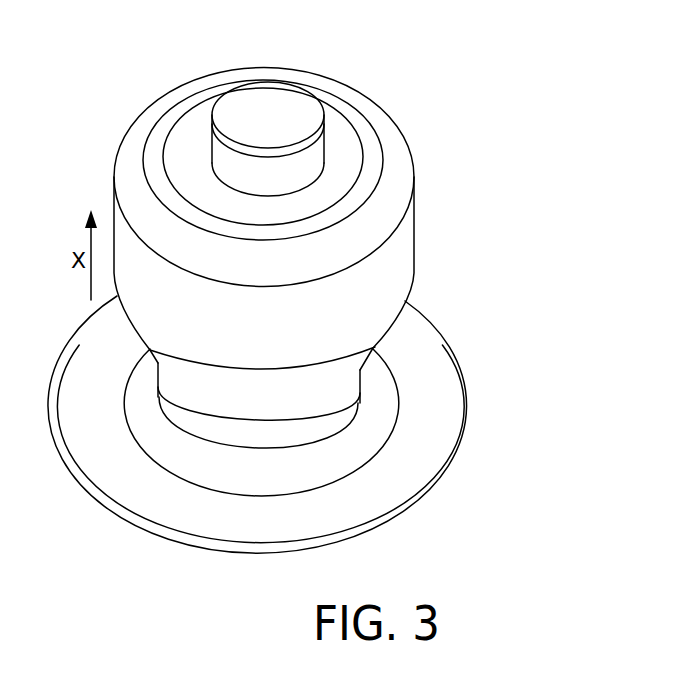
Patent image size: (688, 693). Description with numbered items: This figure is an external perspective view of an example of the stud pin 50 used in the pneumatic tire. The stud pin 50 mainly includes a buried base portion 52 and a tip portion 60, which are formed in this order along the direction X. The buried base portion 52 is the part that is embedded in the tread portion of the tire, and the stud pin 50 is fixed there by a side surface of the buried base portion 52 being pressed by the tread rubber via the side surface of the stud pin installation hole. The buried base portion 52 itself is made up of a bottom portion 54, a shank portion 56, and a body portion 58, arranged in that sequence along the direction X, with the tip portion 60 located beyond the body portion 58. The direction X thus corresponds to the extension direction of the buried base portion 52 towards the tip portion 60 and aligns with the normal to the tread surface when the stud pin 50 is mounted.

The stud pin 50 is at (541, 101).
The buried base portion 52 is at (549, 268).
The bottom portion 54 is at (435, 450).
The shank portion 56 is at (353, 368).
The body portion 58 is at (383, 287).
The tip portion 60 is at (229, 94).